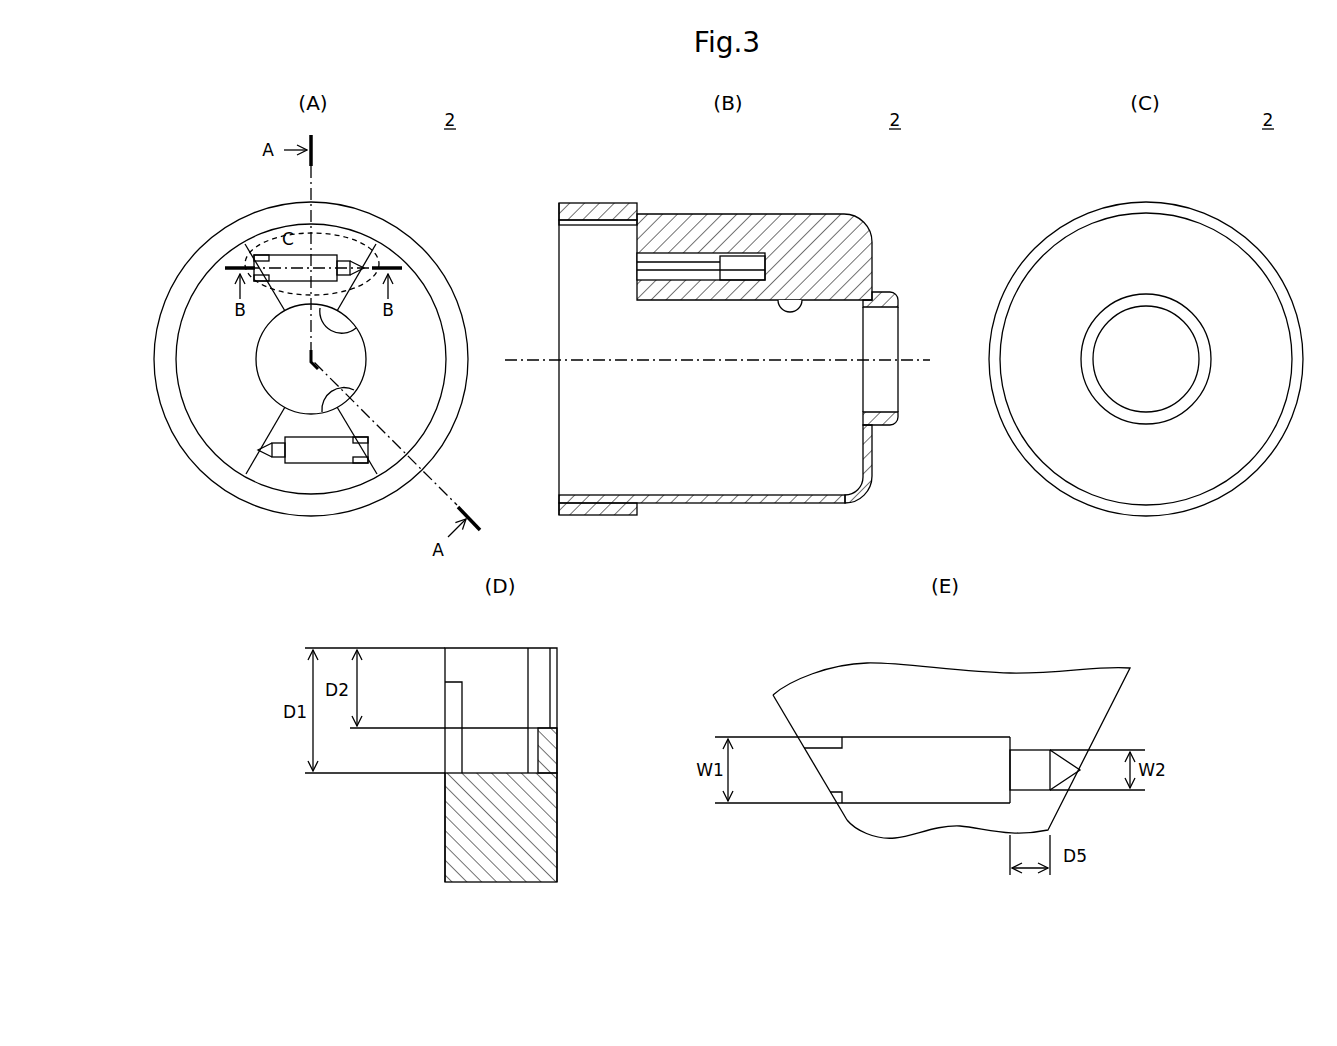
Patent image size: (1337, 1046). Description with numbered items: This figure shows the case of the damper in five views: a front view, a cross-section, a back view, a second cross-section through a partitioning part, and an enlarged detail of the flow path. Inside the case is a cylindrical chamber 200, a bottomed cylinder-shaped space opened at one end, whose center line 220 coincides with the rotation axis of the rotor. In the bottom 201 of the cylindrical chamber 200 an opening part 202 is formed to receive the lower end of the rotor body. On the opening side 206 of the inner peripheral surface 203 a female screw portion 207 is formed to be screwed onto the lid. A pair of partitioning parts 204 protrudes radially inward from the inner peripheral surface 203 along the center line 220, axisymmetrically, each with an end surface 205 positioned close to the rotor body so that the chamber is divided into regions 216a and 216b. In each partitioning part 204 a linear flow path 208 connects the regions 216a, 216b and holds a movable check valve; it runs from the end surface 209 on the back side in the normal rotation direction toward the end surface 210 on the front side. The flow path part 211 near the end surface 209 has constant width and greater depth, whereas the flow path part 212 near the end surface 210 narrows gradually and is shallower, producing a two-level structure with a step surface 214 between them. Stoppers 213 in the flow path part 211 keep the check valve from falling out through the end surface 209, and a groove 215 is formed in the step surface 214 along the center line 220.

The cylindrical chamber 200 is at (247, 419).
The bottom 201 is at (418, 437).
The opening part 202 is at (281, 362).
The inner peripheral surface 203 is at (204, 286).
The partitioning part 204 is at (327, 242).
The end surface 205 is at (351, 326).
The opening side 206 is at (559, 186).
The female screw portion 207 is at (572, 228).
The flow path 208 is at (283, 264).
The end surface on the back side in the normal rotation direction 209 is at (266, 252).
The end surface on the front side in the normal rotation direction 210 is at (370, 246).
The flow path part on the back side in the normal rotation direction 211 is at (528, 640).
The flow path part on the front side in the normal rotation direction 212 is at (557, 640).
The stopper 213 is at (457, 710).
The step surface 214 is at (736, 257).
The groove 215 is at (728, 267).
The region 216a is at (411, 306).
The region 216b is at (200, 342).
The center line 220 is at (915, 360).